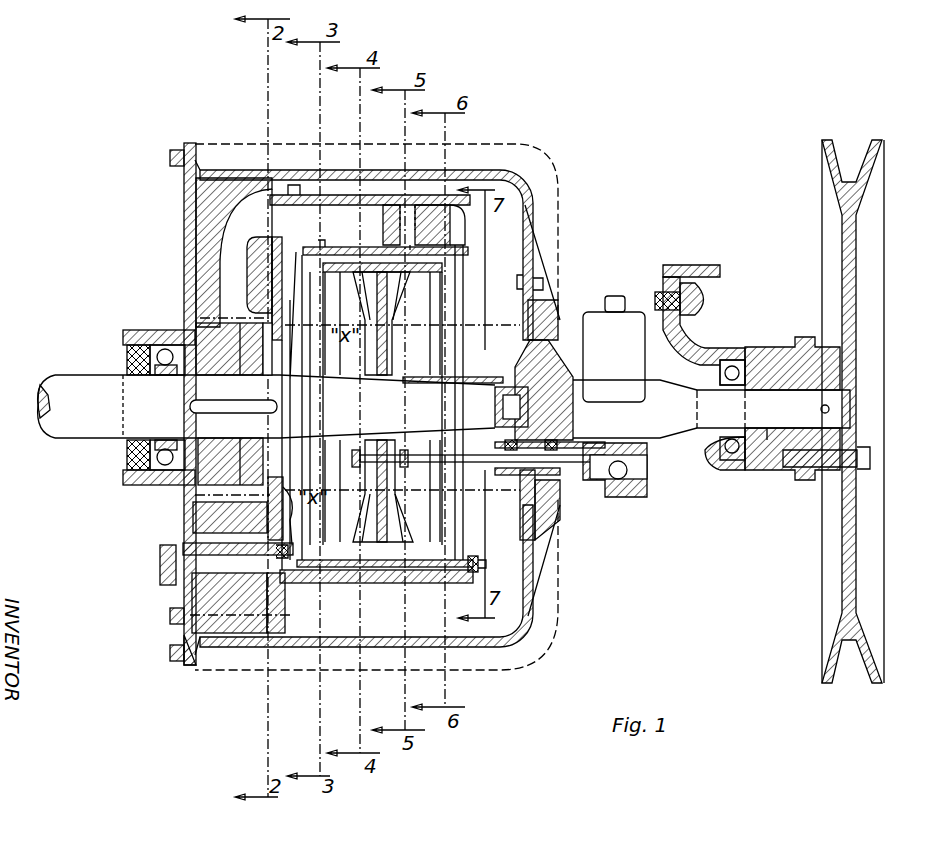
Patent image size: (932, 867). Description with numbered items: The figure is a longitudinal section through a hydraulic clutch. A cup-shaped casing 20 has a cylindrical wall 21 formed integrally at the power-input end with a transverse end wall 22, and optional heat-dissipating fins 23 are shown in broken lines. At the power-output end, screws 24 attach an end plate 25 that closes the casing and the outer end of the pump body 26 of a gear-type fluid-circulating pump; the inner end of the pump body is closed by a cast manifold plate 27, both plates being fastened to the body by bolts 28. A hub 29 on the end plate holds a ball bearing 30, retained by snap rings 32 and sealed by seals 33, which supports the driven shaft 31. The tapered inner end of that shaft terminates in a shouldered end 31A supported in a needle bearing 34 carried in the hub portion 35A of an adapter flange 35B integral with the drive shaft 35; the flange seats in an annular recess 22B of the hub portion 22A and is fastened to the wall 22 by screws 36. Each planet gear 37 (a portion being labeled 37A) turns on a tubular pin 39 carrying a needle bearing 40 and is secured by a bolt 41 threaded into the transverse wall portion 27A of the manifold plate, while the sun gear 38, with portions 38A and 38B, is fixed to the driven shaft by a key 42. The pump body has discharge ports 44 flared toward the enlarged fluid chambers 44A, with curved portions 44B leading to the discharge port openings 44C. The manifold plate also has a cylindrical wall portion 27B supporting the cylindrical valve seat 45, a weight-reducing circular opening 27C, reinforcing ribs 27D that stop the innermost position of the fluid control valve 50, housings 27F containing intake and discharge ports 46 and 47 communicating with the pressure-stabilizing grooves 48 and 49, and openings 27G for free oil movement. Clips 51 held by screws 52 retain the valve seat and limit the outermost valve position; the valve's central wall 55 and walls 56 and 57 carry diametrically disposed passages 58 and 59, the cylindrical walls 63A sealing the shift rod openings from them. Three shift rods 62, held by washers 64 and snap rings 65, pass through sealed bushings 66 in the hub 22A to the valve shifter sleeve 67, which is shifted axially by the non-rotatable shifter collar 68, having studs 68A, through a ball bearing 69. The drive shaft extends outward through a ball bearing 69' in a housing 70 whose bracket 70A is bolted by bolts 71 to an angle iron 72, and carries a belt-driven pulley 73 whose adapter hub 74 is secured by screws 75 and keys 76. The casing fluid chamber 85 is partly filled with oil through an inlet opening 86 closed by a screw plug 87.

The casing 20 is at (396, 382).
The cylindrical wall 21 is at (355, 170).
The transverse end wall 22 is at (440, 175).
The hub portion 22A is at (505, 500).
The annular recess 22B is at (545, 525).
The heat-dissipating fins 23 is at (516, 141).
The screws 24 is at (170, 158).
The end plate 25 is at (184, 190).
The pump body 26 is at (158, 404).
The manifold plate 27 is at (441, 381).
The transverse wall portion 27A is at (441, 383).
The cylindrical wall portion 27B is at (441, 383).
The circular opening 27C is at (391, 383).
The reenforcing ribs 27D is at (391, 383).
The housings 27F is at (391, 383).
The openings 27G is at (372, 431).
The bolts 28 is at (163, 620).
The hub 29 is at (130, 409).
The ball bearing 30 is at (130, 423).
The power output shaft 31 is at (100, 375).
The shouldered end 31A is at (503, 405).
The snap rings 32 is at (130, 423).
The seals 33 is at (127, 458).
The needle type bearing 34 is at (522, 387).
The drive shaft 35 is at (711, 449).
The hub portion 35A is at (515, 365).
The adapter flange 35B is at (558, 318).
The screws 36 is at (567, 318).
The planet gear 37 is at (211, 560).
The hub member portion 37A is at (286, 615).
The sun gear 38 is at (230, 412).
The hub portion 38A is at (231, 412).
The hub portion 38B is at (275, 475).
The tubular pin 39 is at (211, 560).
The needle bearing 40 is at (213, 560).
The bolt 41 is at (211, 560).
The key 42 is at (230, 400).
The discharge ports 44 is at (292, 241).
The enlarged fluid chambers 44A is at (292, 241).
The curved portion 44B is at (292, 241).
The discharge port opening 44C is at (285, 190).
The cylindrical valve seat 45 is at (491, 558).
The intake port 46 is at (450, 200).
The discharge port 47 is at (346, 215).
The pressure-stabilizing groove 48 is at (468, 252).
The pressure-stabilizing groove 49 is at (345, 244).
The fluid control valve 50 is at (445, 312).
The clips 51 is at (491, 565).
The screws 52 is at (480, 565).
The central wall 55 is at (382, 412).
The valve wall 56 is at (382, 407).
The valve wall 57 is at (382, 407).
The passage 58 is at (382, 407).
The passage 59 is at (366, 508).
The shift rods 62 is at (465, 422).
The cylindrical walls 63A is at (465, 437).
The washers 64 is at (465, 437).
The snap rings 65 is at (465, 429).
The sealed bushings 66 is at (520, 445).
The valve shifter sleeve 67 is at (711, 449).
The shifter collar 68 is at (629, 399).
The studs 68A is at (615, 300).
The ball bearing 69 is at (711, 449).
The ball bearing 69' is at (713, 378).
The housing 70 is at (713, 370).
The bracket 70A is at (713, 362).
The bolts 71 is at (713, 378).
The angle iron 72 is at (713, 362).
The pulley 73 is at (850, 208).
The adapter hub 74 is at (831, 401).
The screws 75 is at (831, 408).
The keys 76 is at (868, 462).
The casing fluid chamber 85 is at (530, 215).
The oil inlet opening 86 is at (518, 280).
The screw plug 87 is at (540, 285).